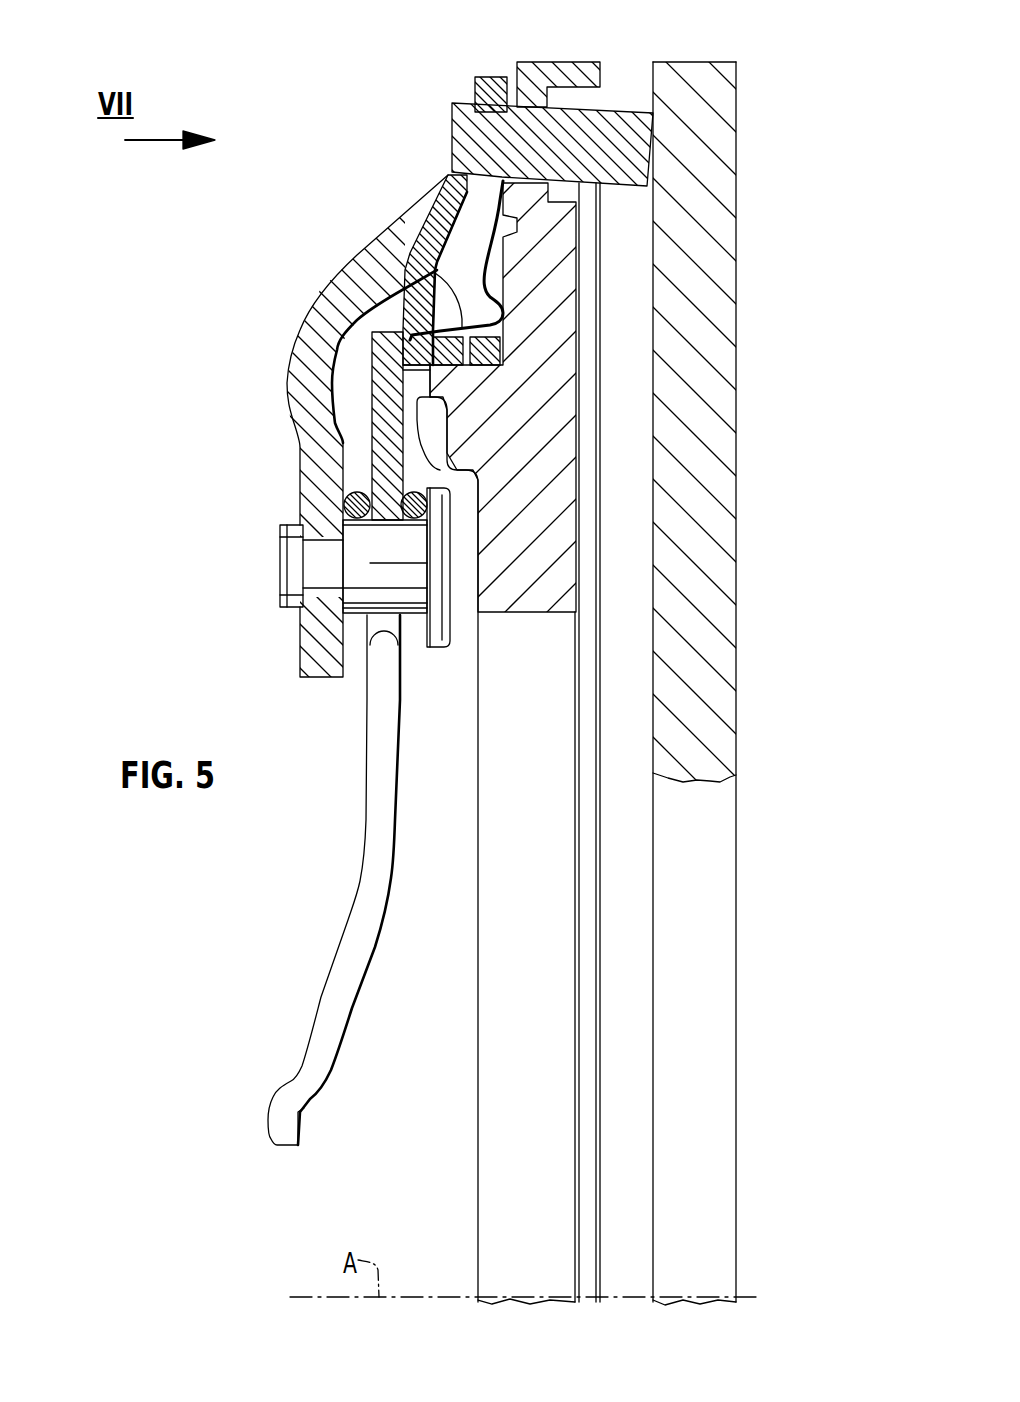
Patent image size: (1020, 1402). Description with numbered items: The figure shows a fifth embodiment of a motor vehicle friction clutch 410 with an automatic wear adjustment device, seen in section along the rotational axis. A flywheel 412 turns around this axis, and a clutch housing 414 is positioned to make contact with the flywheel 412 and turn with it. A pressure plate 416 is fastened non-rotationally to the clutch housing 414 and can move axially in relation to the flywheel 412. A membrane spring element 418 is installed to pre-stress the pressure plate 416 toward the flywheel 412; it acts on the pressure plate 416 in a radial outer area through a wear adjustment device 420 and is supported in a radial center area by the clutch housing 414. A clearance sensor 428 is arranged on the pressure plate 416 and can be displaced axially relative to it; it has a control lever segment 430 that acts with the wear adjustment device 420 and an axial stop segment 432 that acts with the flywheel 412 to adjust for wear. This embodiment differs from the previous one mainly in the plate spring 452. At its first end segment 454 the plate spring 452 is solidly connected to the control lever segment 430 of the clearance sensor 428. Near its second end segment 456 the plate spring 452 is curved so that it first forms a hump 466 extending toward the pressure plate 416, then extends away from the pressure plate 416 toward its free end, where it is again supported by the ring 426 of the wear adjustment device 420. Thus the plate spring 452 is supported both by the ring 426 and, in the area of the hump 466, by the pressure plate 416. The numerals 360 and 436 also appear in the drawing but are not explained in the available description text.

The wire ring 360 is at (405, 332).
The motor vehicle friction clutch 410 is at (306, 466).
The flywheel 412 is at (718, 874).
The clutch housing 414 is at (298, 385).
The pressure plate 416 is at (497, 1137).
The membrane spring element 418 is at (333, 985).
The wear adjustment device 420 is at (462, 394).
The ring 426 is at (450, 366).
The clearance sensor 428 is at (508, 194).
The control lever segment 430 is at (452, 205).
The axial stop segment 432 is at (635, 111).
The retaining ring 436 is at (521, 100).
The plate spring 452 is at (486, 253).
The first end segment 454 is at (512, 73).
The second end segment 456 is at (432, 275).
The hump 466 is at (506, 305).